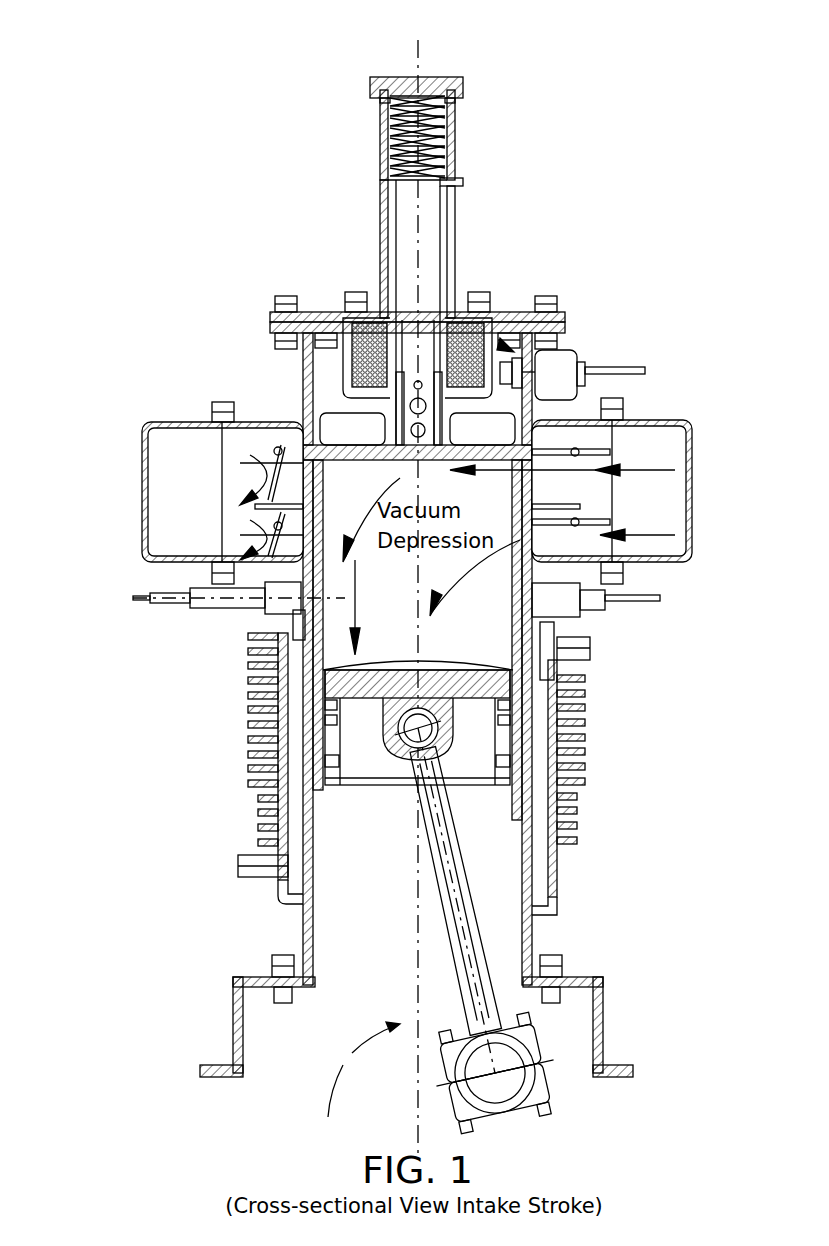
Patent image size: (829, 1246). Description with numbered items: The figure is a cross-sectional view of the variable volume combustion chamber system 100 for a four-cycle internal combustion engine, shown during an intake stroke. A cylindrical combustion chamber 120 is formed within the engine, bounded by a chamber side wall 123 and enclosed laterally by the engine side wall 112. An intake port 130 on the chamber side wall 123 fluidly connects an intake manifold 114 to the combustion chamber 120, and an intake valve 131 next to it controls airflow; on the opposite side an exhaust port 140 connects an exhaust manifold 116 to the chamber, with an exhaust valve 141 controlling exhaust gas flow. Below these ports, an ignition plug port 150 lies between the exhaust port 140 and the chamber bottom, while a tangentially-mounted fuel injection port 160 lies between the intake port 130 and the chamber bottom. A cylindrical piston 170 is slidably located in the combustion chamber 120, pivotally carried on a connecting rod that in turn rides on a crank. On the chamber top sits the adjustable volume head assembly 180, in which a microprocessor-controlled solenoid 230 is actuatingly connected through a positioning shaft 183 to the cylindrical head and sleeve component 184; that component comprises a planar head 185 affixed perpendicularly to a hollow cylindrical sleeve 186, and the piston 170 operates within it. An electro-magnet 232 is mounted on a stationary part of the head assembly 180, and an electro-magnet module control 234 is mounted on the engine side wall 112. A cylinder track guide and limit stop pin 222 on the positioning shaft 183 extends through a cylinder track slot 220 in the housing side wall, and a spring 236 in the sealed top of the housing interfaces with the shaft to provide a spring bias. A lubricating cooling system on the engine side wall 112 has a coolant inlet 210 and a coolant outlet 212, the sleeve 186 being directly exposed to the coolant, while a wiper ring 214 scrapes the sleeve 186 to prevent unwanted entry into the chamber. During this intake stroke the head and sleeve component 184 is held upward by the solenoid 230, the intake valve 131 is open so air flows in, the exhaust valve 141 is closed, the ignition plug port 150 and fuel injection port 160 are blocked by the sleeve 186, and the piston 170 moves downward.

The variable volume combustion chamber system 100 is at (616, 91).
The engine side wall 112 is at (535, 927).
The intake manifold 114 is at (632, 452).
The exhaust manifold 116 is at (192, 457).
The combustion chamber 120 is at (558, 688).
The chamber side wall 123 is at (320, 633).
The intake port 130 is at (527, 462).
The intake valve 131 is at (610, 530).
The exhaust port 140 is at (365, 441).
The exhaust valve 141 is at (262, 555).
The ignition plug port 150 is at (265, 604).
The fuel injection port 160 is at (530, 585).
The piston 170 is at (400, 688).
The adjustable volume head assembly 180 is at (360, 247).
The positioning shaft 183 is at (473, 372).
The cylindrical head and sleeve component 184 is at (288, 318).
The planar head 185 is at (548, 412).
The hollow cylindrical sleeve 186 is at (244, 575).
The coolant inlet 210 is at (592, 652).
The coolant outlet 212 is at (250, 866).
The wiper ring 214 is at (290, 730).
The cylinder track slot 220 is at (448, 222).
The cylinder track guide and limit stop pin 222 is at (463, 181).
The solenoid 230 is at (550, 308).
The electro-magnet 232 is at (372, 352).
The electro-magnet module control 234 is at (565, 352).
The spring 236 is at (395, 127).